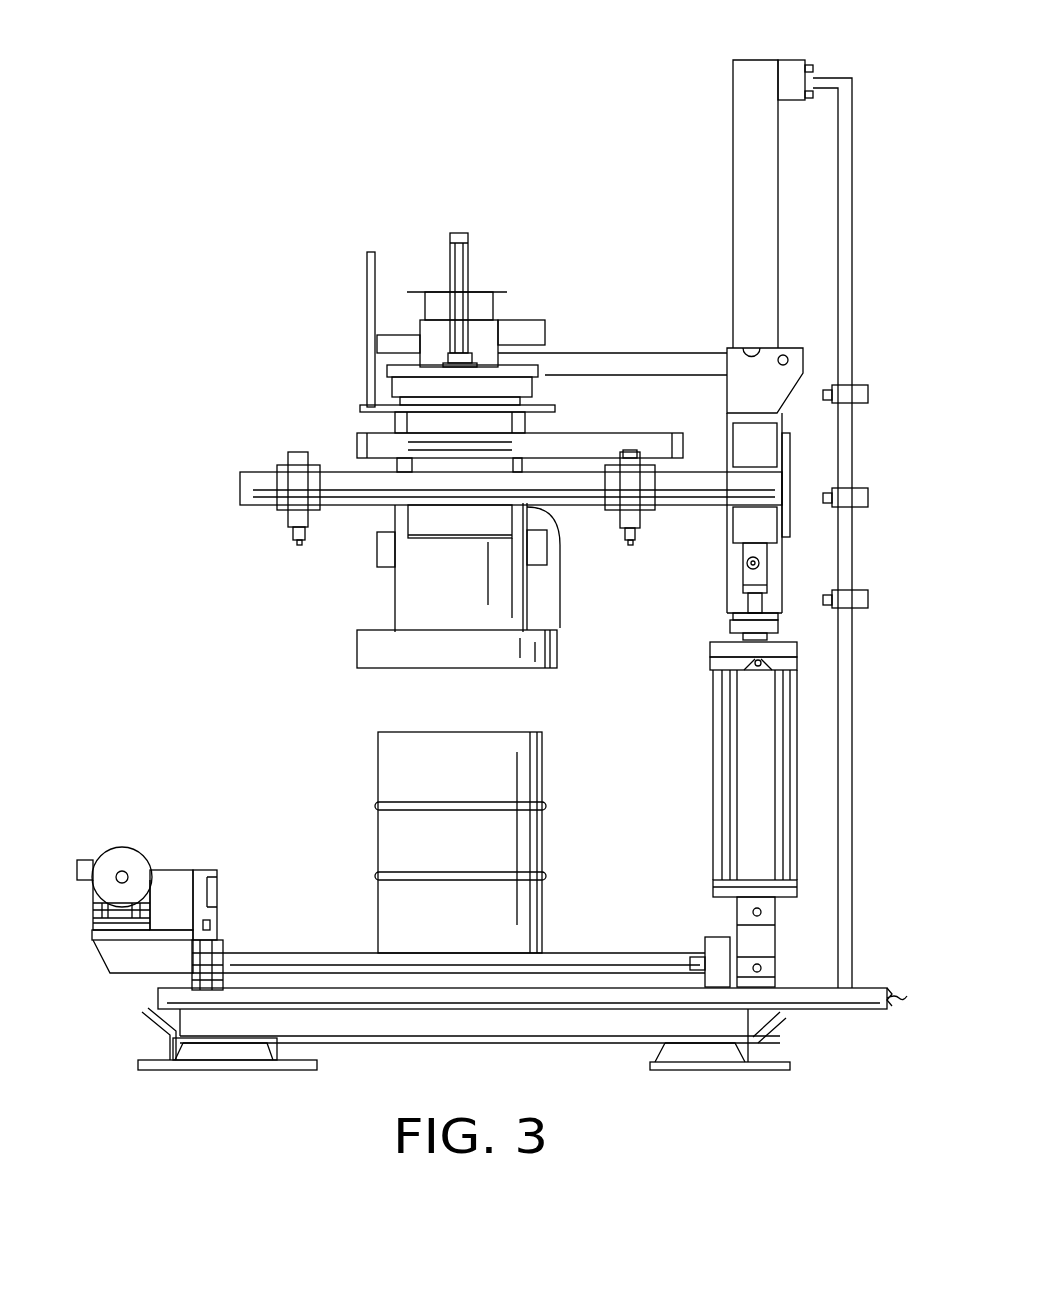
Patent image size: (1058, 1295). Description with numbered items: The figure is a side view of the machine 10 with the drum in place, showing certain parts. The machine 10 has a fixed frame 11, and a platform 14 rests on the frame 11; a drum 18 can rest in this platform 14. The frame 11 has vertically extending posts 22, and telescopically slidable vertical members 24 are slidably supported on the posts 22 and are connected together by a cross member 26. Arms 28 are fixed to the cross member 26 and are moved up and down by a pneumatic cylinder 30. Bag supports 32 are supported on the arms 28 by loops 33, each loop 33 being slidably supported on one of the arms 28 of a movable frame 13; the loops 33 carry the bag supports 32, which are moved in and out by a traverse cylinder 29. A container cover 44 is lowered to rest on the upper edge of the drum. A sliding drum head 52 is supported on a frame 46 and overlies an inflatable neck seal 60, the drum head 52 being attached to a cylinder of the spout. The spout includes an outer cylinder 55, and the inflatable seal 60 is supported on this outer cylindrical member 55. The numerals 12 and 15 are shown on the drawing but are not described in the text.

The machine 10 is at (878, 103).
The fixed frame 11 is at (768, 1045).
The base plate 12 is at (892, 995).
The movable frame 13 is at (190, 1023).
The platform 14 is at (585, 958).
The motor 15 is at (105, 888).
The drum 18 is at (395, 843).
The vertically extending posts 22 is at (770, 214).
The telescopically slidable vertical members 24 is at (735, 545).
The cross member 26 is at (789, 62).
The arms 28 is at (585, 507).
The traverse cylinder 29 is at (352, 437).
The pneumatic cylinder 30 is at (713, 730).
The bag supports 32 is at (308, 533).
The loops 33 is at (282, 484).
The container cover 44 is at (356, 648).
The frame 46 is at (582, 360).
The sliding drum head 52 is at (393, 600).
The outer cylinder 55 is at (513, 423).
The inflatable neck seal 60 is at (561, 572).